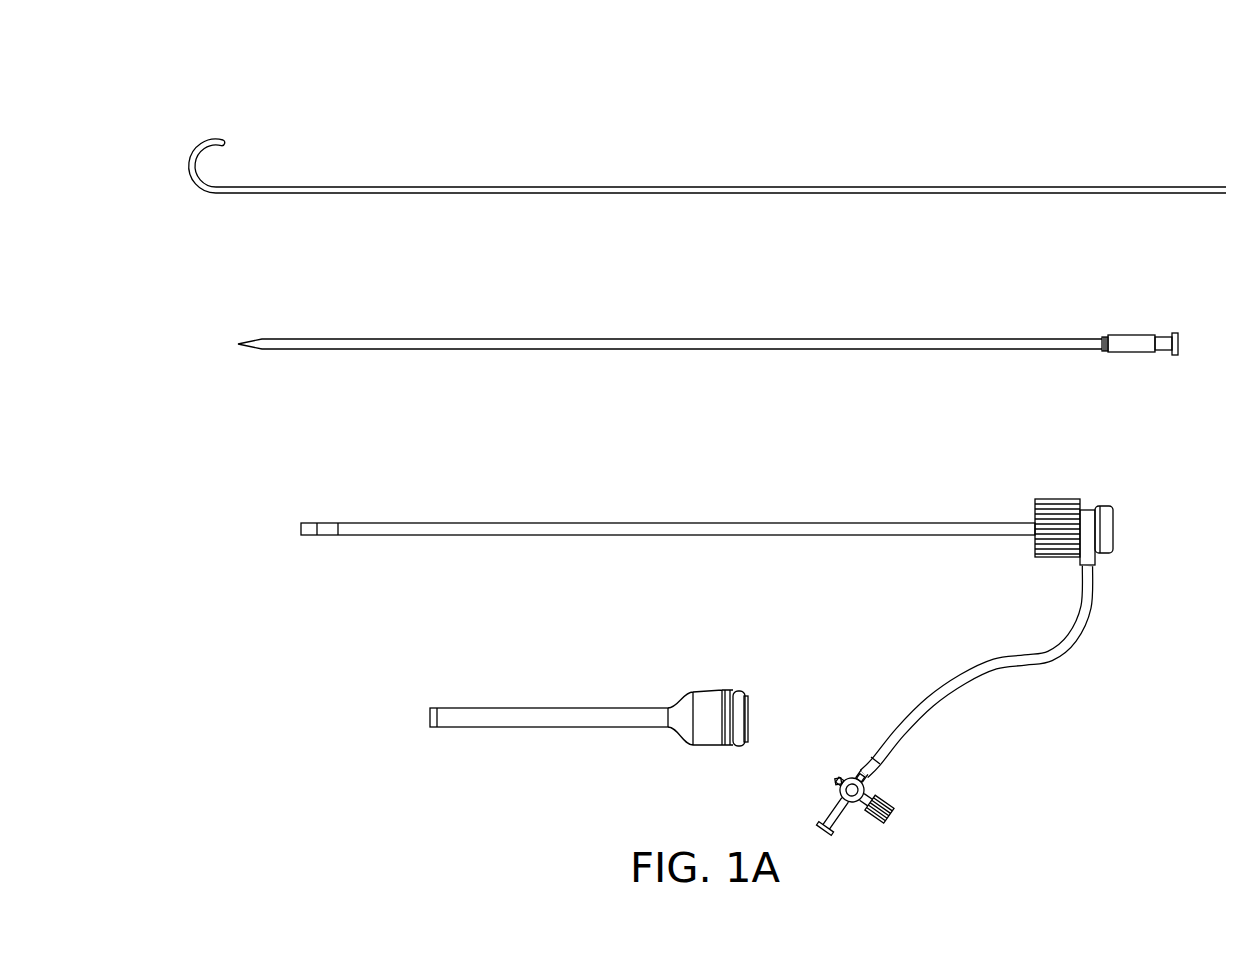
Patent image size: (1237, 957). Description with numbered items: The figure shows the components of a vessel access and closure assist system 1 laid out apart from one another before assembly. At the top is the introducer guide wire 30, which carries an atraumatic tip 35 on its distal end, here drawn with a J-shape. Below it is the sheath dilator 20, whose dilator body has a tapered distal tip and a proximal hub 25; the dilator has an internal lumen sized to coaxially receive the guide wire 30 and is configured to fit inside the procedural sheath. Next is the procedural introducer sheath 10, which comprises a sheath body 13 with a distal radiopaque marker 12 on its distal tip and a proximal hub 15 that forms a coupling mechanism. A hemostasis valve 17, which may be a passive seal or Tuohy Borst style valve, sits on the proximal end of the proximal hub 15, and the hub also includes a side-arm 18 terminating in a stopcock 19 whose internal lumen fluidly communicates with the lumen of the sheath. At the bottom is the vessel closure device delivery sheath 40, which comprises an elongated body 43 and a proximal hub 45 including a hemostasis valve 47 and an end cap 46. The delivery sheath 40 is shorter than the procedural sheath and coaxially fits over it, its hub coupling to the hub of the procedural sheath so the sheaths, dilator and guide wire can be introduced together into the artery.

The vessel access and closure assist system 1 is at (968, 80).
The procedural introducer sheath 10 is at (723, 642).
The distal radiopaque marker 12 is at (325, 522).
The sheath body 13 is at (788, 523).
The proximal hub 15 is at (1053, 499).
The hemostasis valve 17 is at (1105, 507).
The side-arm 18 is at (1063, 652).
The stopcock 19 is at (905, 805).
The sheath dilator 20 is at (712, 309).
The proximal hub 25 is at (1143, 341).
The introducer guide wire 30 is at (701, 127).
The atraumatic tip 35 is at (213, 137).
The vessel closure device delivery sheath 40 is at (631, 714).
The elongated body 43 is at (490, 728).
The proximal hub 45 is at (705, 732).
The end cap 46 is at (749, 722).
The hemostasis valve 47 is at (739, 694).